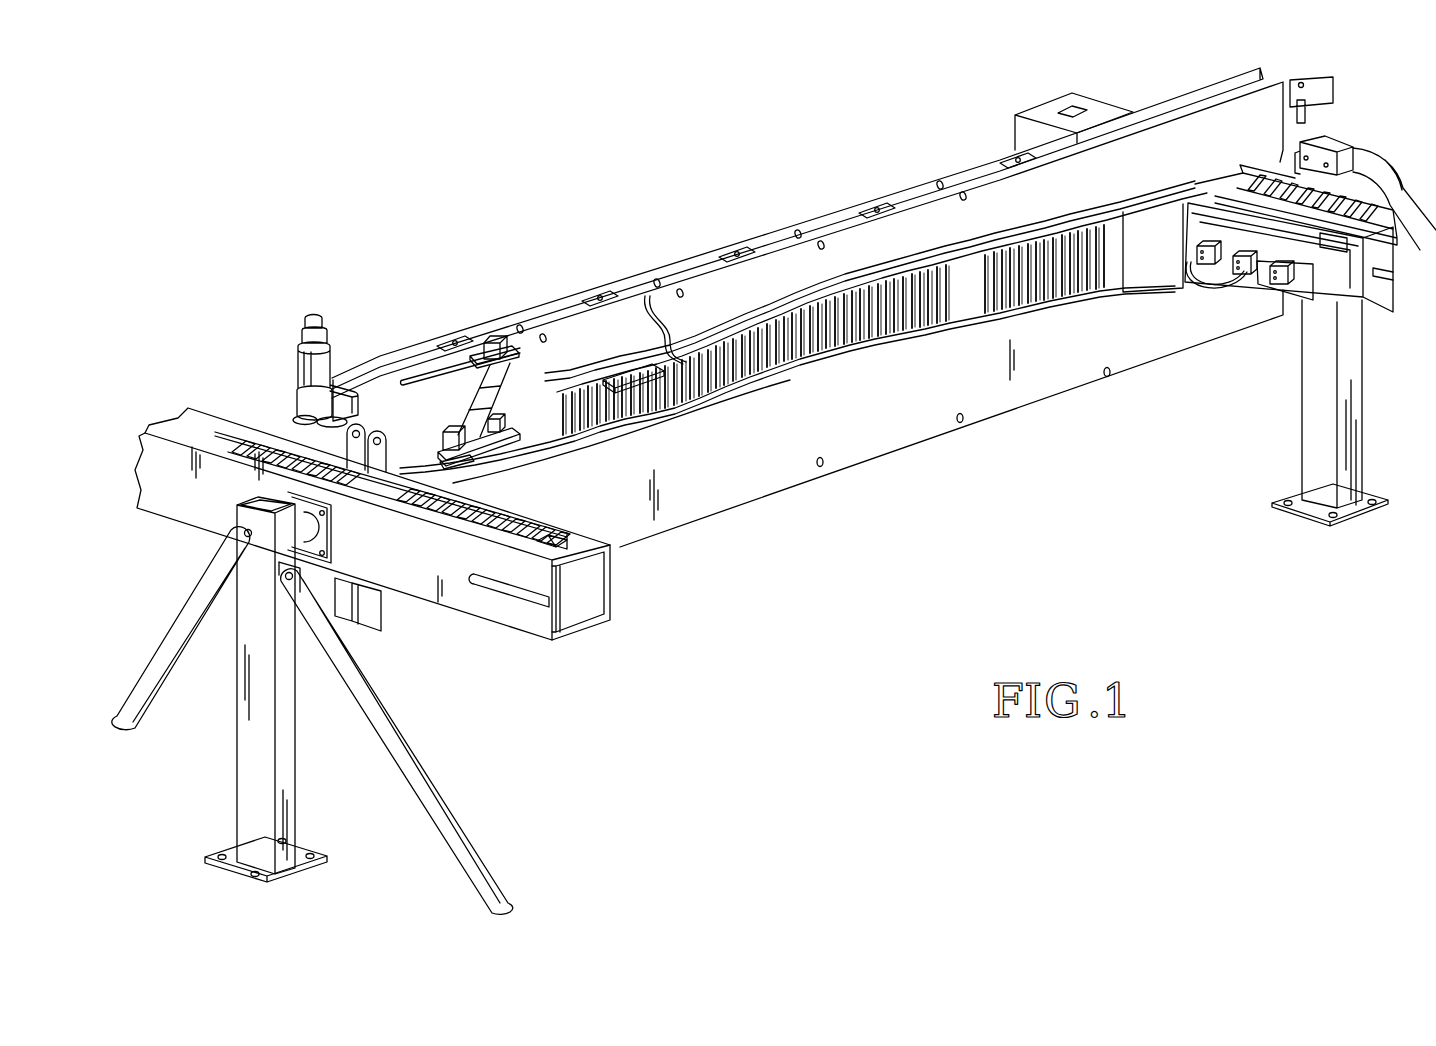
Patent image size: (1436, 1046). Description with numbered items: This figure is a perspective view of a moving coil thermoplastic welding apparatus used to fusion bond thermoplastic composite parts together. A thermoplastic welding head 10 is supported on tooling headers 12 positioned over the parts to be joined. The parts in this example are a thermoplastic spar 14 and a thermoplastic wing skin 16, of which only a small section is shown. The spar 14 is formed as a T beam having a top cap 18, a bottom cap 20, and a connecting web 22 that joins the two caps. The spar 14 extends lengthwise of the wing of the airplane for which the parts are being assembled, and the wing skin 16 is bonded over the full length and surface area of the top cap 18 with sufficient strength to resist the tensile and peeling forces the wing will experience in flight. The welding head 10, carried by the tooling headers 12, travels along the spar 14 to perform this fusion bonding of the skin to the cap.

The thermoplastic welding head 10 is at (434, 394).
The tooling headers 12 is at (912, 184).
The thermoplastic spar 14 is at (959, 318).
The thermoplastic wing skin 16 is at (648, 374).
The top cap 18 is at (601, 384).
The bottom cap 20 is at (1162, 298).
The connecting web 22 is at (1166, 252).